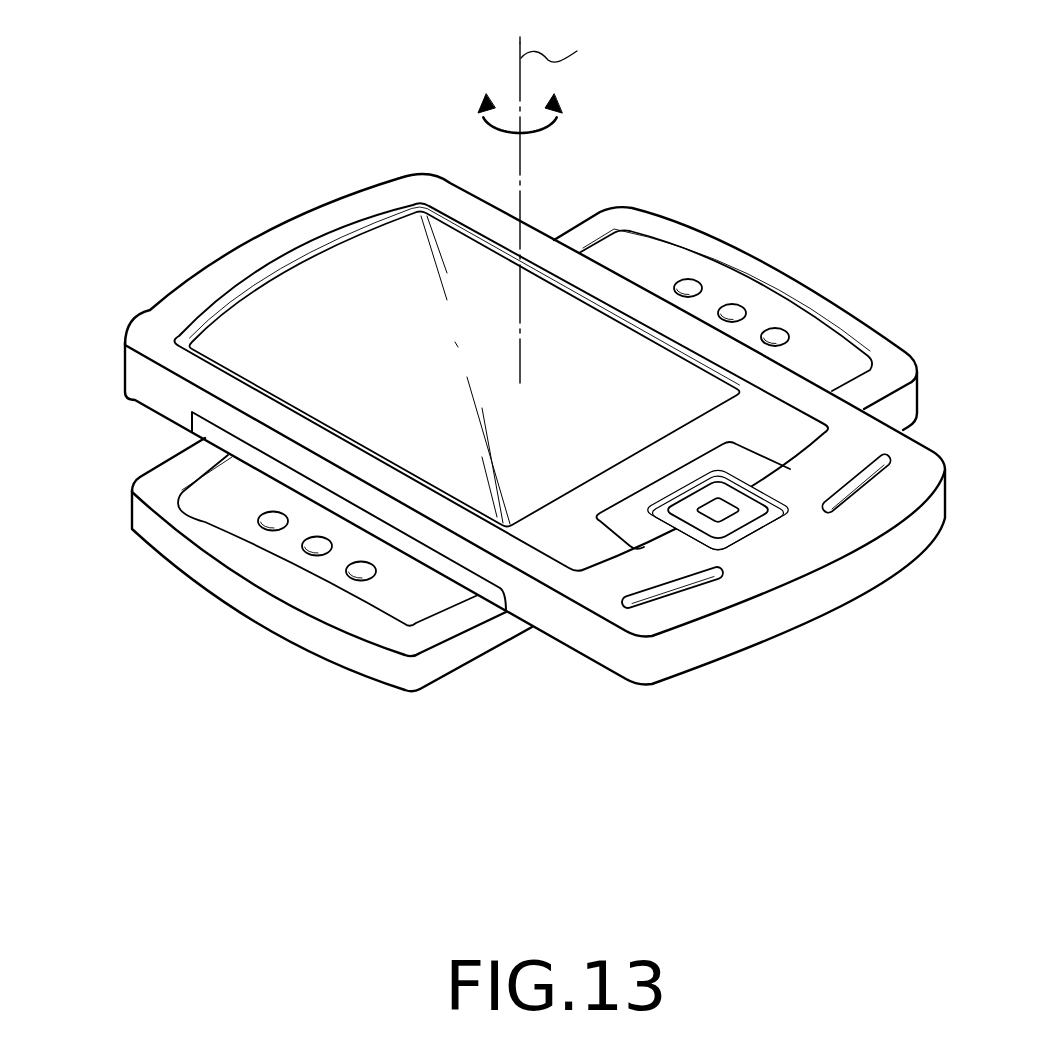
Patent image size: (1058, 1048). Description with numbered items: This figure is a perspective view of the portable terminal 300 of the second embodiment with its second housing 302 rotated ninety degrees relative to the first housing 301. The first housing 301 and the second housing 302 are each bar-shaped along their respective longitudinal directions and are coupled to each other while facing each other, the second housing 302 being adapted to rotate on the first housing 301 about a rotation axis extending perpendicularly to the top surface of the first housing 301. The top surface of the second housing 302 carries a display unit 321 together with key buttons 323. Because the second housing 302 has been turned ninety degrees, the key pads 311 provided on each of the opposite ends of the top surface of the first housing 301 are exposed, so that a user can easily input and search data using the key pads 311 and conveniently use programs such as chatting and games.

The portable terminal 300 is at (728, 87).
The first housing 301 is at (240, 640).
The second housing 302 is at (318, 184).
The key pads 311 is at (692, 281).
The display unit 321 is at (240, 338).
The key buttons 323 is at (770, 417).